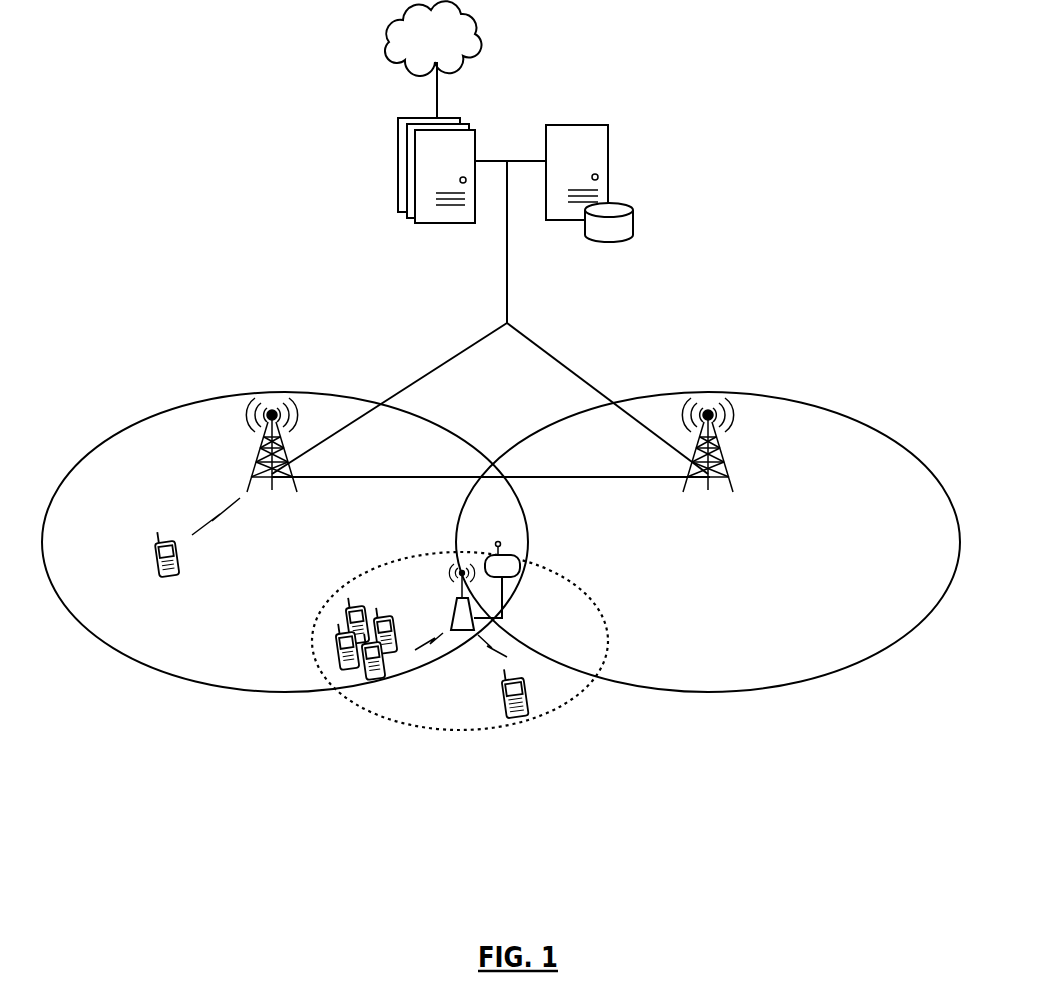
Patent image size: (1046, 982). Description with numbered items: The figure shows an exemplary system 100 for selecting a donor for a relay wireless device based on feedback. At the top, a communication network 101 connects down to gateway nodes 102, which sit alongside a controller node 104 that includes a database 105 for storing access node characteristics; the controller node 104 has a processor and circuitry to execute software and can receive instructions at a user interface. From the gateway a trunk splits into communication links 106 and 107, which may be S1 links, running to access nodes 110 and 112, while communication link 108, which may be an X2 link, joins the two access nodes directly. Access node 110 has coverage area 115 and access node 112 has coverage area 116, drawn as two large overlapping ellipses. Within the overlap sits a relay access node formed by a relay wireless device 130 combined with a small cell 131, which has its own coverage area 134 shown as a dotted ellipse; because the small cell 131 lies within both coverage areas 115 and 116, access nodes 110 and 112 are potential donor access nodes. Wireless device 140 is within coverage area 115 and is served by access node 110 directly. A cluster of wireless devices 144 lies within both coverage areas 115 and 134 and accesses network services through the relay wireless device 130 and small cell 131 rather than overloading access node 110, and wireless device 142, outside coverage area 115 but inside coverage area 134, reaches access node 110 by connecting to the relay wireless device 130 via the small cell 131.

The system 100 is at (538, 66).
The communication network 101 is at (418, 43).
The gateway nodes 102 is at (398, 131).
The controller node 104 is at (608, 145).
The database 105 is at (633, 205).
The communication link 106 is at (440, 364).
The communication link 107 is at (552, 352).
The communication link 108 is at (433, 475).
The access node 110 is at (292, 458).
The access node 112 is at (728, 458).
The coverage area 115 is at (215, 395).
The coverage area 116 is at (655, 393).
The relay wireless device 130 is at (520, 560).
The small cell 131 is at (426, 579).
The coverage area 134 is at (460, 657).
The wireless device 140 is at (155, 563).
The wireless device 142 is at (510, 680).
The cluster of wireless devices 144 is at (388, 684).